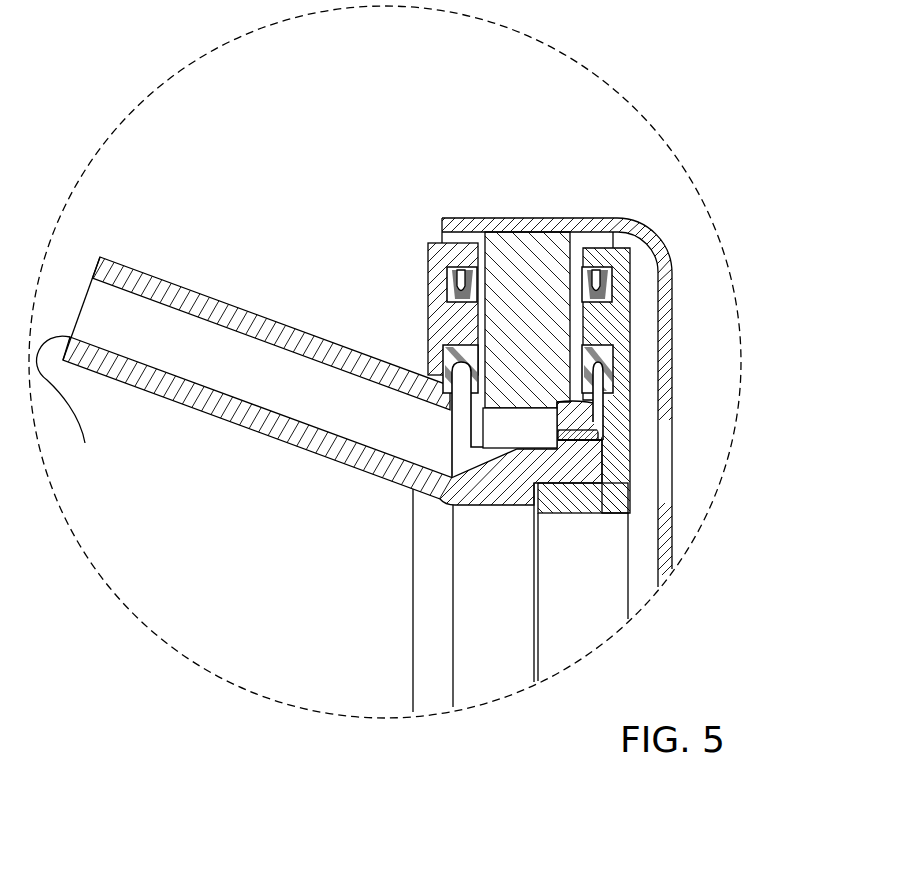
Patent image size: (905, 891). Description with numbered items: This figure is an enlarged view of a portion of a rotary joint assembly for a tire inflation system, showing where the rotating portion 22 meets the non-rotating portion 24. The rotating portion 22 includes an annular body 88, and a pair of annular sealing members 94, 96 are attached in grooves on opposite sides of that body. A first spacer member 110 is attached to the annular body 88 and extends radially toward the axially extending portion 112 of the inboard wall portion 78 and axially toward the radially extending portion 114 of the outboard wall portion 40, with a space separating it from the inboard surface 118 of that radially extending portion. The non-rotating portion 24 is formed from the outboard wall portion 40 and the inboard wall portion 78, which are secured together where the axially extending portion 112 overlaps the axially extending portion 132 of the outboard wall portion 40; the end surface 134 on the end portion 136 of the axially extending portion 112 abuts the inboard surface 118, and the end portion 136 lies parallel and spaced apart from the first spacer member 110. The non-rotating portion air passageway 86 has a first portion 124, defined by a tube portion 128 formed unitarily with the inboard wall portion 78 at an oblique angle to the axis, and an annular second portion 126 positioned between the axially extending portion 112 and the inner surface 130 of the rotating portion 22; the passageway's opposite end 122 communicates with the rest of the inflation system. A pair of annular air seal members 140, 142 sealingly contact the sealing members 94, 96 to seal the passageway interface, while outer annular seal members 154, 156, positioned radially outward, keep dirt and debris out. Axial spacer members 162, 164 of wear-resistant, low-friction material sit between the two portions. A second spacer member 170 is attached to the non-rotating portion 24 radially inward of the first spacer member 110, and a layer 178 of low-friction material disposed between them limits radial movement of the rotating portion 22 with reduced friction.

The rotating portion 22 is at (498, 240).
The non-rotating portion 24 is at (430, 283).
The outboard wall portion 40 is at (620, 305).
The inboard wall portion 78 is at (440, 299).
The non-rotating portion air passageway 86 is at (531, 440).
The annular body 88 is at (540, 280).
The annular sealing member 94 is at (476, 278).
The annular sealing member 96 is at (572, 262).
The first spacer member 110 is at (620, 418).
The axially extending portion 112 is at (627, 472).
The radially extending portion 114 is at (588, 421).
The inboard surface 118 is at (628, 448).
The opposite end 122 is at (71, 402).
The first portion 124 is at (168, 335).
The second portion 126 is at (481, 427).
The tube portion 128 is at (258, 432).
The inner surface 130 is at (637, 405).
The axially extending portion 132 is at (593, 513).
The end surface 134 is at (630, 458).
The end portion 136 is at (660, 507).
The annular air seal member 140 is at (473, 310).
The annular air seal member 142 is at (617, 362).
The outer annular seal member 154 is at (430, 262).
The outer annular seal member 156 is at (608, 280).
The axial spacer member 162 is at (430, 312).
The axial spacer member 164 is at (610, 327).
The second spacer member 170 is at (578, 478).
The layer 178 is at (620, 437).